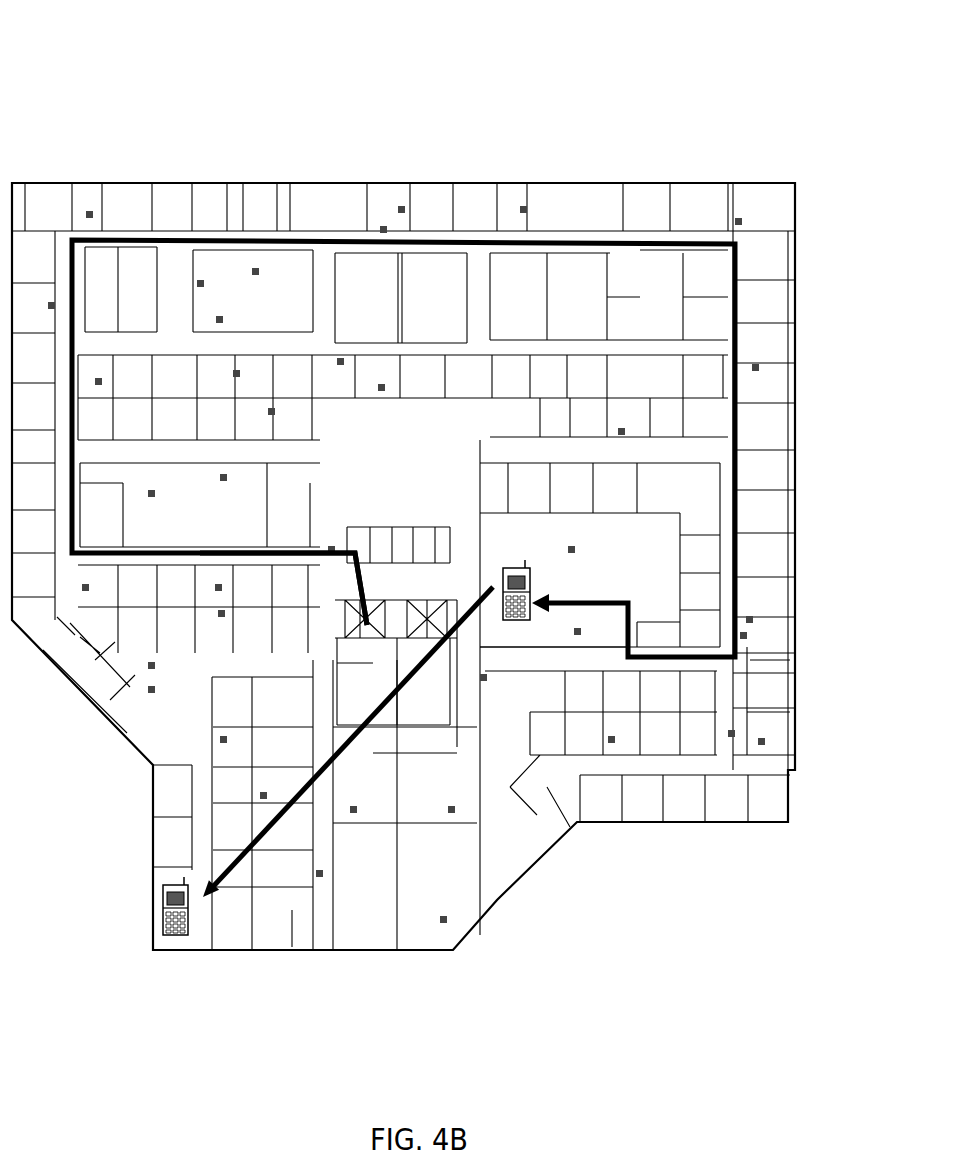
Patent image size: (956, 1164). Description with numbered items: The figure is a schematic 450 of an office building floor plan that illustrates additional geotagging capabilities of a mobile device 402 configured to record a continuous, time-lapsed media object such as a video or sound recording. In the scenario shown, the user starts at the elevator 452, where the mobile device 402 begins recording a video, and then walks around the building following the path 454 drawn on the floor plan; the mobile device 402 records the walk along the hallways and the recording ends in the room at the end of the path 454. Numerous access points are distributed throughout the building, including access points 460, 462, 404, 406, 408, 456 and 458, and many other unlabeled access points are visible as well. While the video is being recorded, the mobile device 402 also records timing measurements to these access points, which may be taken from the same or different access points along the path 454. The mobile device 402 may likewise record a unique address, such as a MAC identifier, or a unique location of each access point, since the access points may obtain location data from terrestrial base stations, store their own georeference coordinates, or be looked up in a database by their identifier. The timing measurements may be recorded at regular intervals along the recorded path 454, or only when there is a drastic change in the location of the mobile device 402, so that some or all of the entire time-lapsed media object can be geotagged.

The schematic 450 is at (92, 35).
The elevator 452 is at (367, 627).
The path 454 is at (122, 243).
The access point 456 is at (780, 738).
The access point 458 is at (457, 922).
The access point 460 is at (88, 215).
The access point 462 is at (522, 213).
The mobile device 402 is at (540, 593).
The access point 404 is at (398, 388).
The access point 406 is at (580, 647).
The access point 408 is at (585, 527).